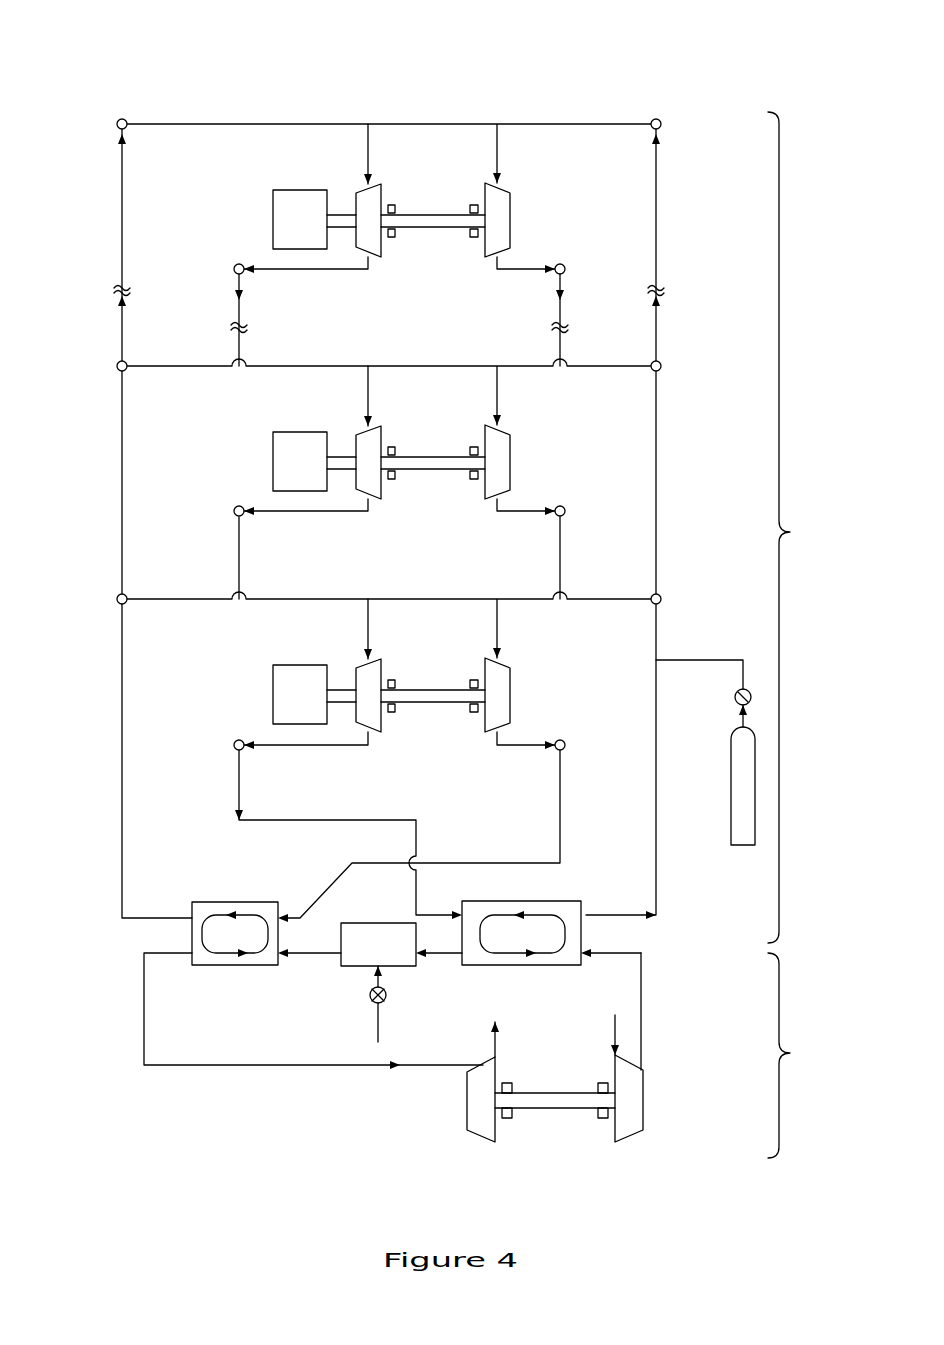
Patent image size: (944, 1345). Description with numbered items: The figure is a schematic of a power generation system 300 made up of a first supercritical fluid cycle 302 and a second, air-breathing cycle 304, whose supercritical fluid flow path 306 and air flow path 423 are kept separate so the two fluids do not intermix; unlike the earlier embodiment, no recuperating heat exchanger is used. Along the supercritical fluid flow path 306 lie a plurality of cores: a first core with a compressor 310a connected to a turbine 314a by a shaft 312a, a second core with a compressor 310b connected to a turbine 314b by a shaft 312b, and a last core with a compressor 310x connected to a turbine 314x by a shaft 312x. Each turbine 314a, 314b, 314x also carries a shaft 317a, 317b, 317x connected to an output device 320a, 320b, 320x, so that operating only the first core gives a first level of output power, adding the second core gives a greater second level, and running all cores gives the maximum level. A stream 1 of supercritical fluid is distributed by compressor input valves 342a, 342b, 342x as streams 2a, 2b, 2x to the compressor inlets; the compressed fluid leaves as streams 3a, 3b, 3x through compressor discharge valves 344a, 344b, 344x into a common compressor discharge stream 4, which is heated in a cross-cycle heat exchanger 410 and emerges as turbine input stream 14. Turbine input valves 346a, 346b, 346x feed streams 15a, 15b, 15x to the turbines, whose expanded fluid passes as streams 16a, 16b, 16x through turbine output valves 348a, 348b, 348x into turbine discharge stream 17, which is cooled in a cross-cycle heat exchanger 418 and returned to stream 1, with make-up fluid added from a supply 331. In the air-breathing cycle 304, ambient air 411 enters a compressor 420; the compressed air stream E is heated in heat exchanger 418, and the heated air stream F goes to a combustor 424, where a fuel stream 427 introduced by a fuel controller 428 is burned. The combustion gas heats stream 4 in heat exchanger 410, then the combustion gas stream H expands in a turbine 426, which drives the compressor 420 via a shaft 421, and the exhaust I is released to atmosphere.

The power generation system 300 is at (237, 78).
The first supercritical fluid cycle 302 is at (803, 527).
The air-breathing cycle 304 is at (803, 1055).
The supercritical fluid flow path 306 is at (658, 632).
The compressor 310x is at (498, 196).
The compressor 310b is at (498, 438).
The compressor 310a is at (498, 671).
The shaft 312x is at (414, 233).
The shaft 312b is at (414, 475).
The shaft 312a is at (414, 708).
The turbine 314x is at (372, 195).
The turbine 314b is at (372, 437).
The turbine 314a is at (372, 670).
The shaft 317x is at (332, 215).
The shaft 317b is at (332, 457).
The shaft 317a is at (332, 690).
The output device 320x is at (300, 219).
The output device 320b is at (300, 461).
The output device 320a is at (300, 694).
The supply 331 is at (742, 780).
The compressor input valve 342x is at (656, 119).
The compressor input valve 342b is at (660, 366).
The compressor input valve 342a is at (660, 599).
The compressor discharge valve 344x is at (560, 264).
The compressor discharge valve 344b is at (565, 509).
The compressor discharge valve 344a is at (565, 743).
The turbine input valve 346x is at (122, 119).
The turbine input valve 346b is at (118, 366).
The turbine input valve 346a is at (118, 599).
The turbine output valve 348x is at (239, 264).
The turbine output valve 348b is at (235, 509).
The turbine output valve 348a is at (235, 743).
The stream of supercritical fluid 1 is at (656, 188).
The stream of supercritical fluid 2x is at (600, 124).
The stream of supercritical fluid 2b is at (616, 366).
The stream of supercritical fluid 2a is at (616, 599).
The compressed supercritical fluid stream 3x is at (497, 278).
The compressed supercritical fluid stream 3b is at (497, 520).
The compressed supercritical fluid stream 3a is at (497, 754).
The compressor discharge stream 4 is at (563, 283).
The turbine input stream 14 is at (122, 192).
The stream of supercritical fluid 15x is at (178, 124).
The stream of supercritical fluid 15b is at (178, 366).
The stream of supercritical fluid 15a is at (178, 599).
The expanded supercritical fluid stream 16x is at (276, 274).
The expanded supercritical fluid stream 16b is at (276, 516).
The expanded supercritical fluid stream 16a is at (276, 750).
The turbine discharge stream 17 is at (235, 285).
The cross-cycle heat exchanger 410 is at (235, 933).
The cross-cycle heat exchanger 418 is at (521, 933).
The combustor 424 is at (370, 944).
The stream of fuel 427 is at (370, 990).
The fuel controller 428 is at (376, 1020).
The air flow path 423 is at (644, 963).
The ambient air 411 is at (612, 1025).
The shaft 421 is at (565, 1092).
The turbine 426 is at (475, 1108).
The compressor 420 is at (628, 1127).
The stream of combustion gas H is at (146, 1017).
The stream of heated compressed air F is at (436, 960).
The combustion gas exhaust I is at (492, 1047).
The stream of compressed air E is at (643, 1027).